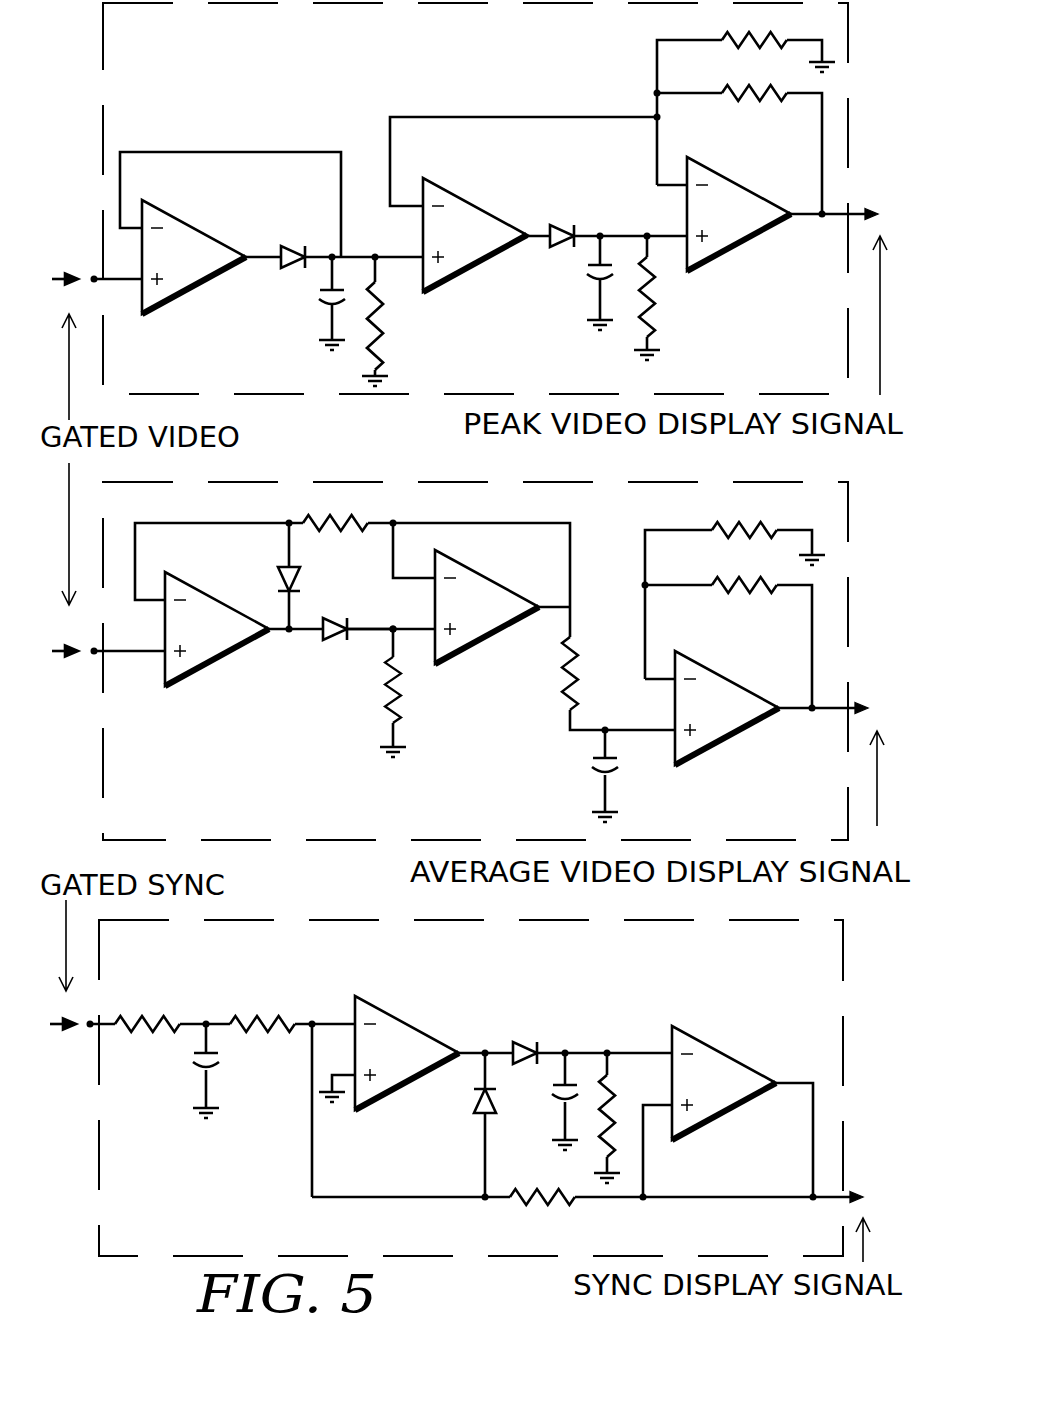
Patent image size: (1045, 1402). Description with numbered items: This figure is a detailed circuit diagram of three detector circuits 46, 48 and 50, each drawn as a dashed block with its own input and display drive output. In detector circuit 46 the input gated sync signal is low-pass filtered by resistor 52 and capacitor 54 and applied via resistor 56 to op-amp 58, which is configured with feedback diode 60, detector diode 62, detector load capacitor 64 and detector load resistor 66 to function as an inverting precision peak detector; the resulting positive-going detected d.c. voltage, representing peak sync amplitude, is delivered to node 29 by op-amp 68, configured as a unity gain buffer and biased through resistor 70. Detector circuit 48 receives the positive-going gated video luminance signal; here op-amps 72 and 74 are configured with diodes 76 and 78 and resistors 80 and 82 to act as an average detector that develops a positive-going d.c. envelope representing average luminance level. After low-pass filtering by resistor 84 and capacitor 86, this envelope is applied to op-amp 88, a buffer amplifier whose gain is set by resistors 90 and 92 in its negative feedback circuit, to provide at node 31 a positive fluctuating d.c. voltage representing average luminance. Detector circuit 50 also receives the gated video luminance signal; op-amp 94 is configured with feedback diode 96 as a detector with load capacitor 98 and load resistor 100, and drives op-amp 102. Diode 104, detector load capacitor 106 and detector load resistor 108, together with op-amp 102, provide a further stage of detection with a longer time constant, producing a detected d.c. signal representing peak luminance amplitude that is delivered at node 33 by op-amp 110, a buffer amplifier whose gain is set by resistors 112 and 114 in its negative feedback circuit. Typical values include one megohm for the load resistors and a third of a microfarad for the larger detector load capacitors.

The node 29 is at (855, 1192).
The node 31 is at (856, 704).
The node 33 is at (858, 212).
The detector circuit 46 is at (843, 960).
The detector circuit 48 is at (848, 530).
The detector circuit 50 is at (848, 52).
The resistor 52 is at (158, 1013).
The capacitor 54 is at (196, 1070).
The resistor 56 is at (268, 1013).
The op-amp 58 is at (385, 1007).
The feedback diode 60 is at (478, 1104).
The detector diode 62 is at (524, 1040).
The detector load capacitor 64 is at (560, 1100).
The detector load resistor 66 is at (612, 1095).
The op-amp 68 is at (697, 1030).
The resistor 70 is at (545, 1205).
The op-amp 72 is at (280, 578).
The op-amp 74 is at (465, 565).
The diode 76 is at (330, 619).
The diode 78 is at (335, 642).
The resistor 80 is at (345, 516).
The resistor 82 is at (388, 690).
The resistor 84 is at (560, 668).
The capacitor 86 is at (596, 776).
The op-amp 88 is at (708, 664).
The resistor 90 is at (748, 592).
The resistor 92 is at (738, 524).
The op-amp 94 is at (168, 210).
The feedback diode 96 is at (291, 247).
The load capacitor 98 is at (322, 306).
The load resistor 100 is at (382, 320).
The op-amp 102 is at (445, 180).
The diode 104 is at (553, 226).
The detector load capacitor 106 is at (595, 281).
The detector load resistor 108 is at (654, 300).
The op-amp 110 is at (715, 172).
The resistor 112 is at (770, 101).
The resistor 114 is at (722, 36).